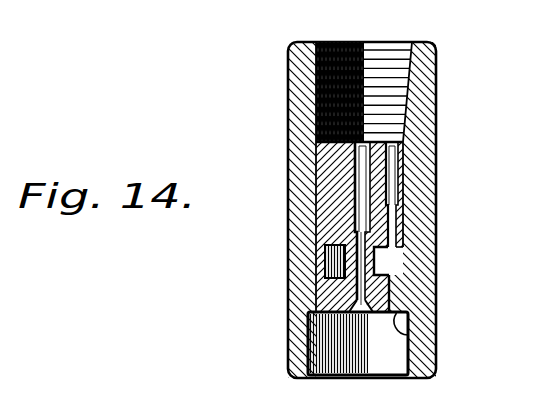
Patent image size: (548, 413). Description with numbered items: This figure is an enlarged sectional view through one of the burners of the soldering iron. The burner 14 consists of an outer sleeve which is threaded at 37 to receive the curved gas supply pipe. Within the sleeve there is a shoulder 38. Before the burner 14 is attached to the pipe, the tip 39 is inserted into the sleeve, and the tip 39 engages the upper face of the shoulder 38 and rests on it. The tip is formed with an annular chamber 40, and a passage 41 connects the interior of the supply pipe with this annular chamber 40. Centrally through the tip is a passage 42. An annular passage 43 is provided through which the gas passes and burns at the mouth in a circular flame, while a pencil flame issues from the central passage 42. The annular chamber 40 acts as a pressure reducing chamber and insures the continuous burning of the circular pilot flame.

The burner 14 is at (420, 122).
The threaded portion 37 is at (398, 76).
The shoulder 38 is at (401, 258).
The tip 39 is at (375, 177).
The annular chamber 40 is at (385, 267).
The passage 41 is at (387, 222).
The central passage 42 is at (360, 294).
The annular passage 43 is at (408, 338).